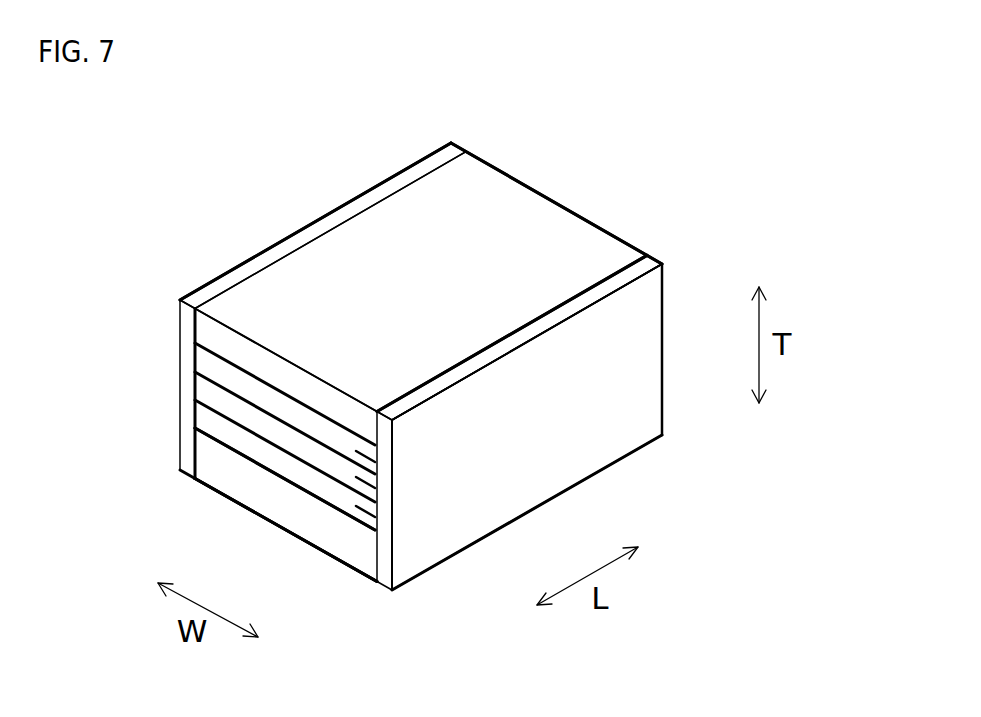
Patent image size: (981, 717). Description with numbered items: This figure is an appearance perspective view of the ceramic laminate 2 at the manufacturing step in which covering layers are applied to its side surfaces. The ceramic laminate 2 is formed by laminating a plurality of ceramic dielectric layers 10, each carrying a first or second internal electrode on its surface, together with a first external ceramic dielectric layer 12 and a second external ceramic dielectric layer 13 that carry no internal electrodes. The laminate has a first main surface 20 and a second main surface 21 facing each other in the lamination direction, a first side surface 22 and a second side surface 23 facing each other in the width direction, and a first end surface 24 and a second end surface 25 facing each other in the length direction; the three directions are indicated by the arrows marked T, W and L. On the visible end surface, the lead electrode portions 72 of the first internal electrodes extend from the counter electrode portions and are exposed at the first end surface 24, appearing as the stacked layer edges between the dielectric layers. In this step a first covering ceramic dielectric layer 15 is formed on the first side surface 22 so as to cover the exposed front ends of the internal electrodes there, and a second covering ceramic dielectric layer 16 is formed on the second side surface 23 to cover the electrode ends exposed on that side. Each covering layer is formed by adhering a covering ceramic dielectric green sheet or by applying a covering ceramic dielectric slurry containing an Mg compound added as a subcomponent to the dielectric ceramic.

The ceramic laminate 2 is at (266, 296).
The ceramic dielectric layer 10 is at (357, 452).
The first external ceramic dielectric layer 12 is at (213, 337).
The second external ceramic dielectric layer 13 is at (330, 535).
The first covering ceramic dielectric layer 15 is at (597, 451).
The second covering ceramic dielectric layer 16 is at (305, 226).
The first main surface 20 is at (540, 222).
The second main surface 21 is at (298, 538).
The first side surface 22 is at (560, 307).
The second side surface 23 is at (391, 193).
The first end surface 24 is at (265, 497).
The second end surface 25 is at (590, 220).
The lead electrode portion 72 is at (237, 367).